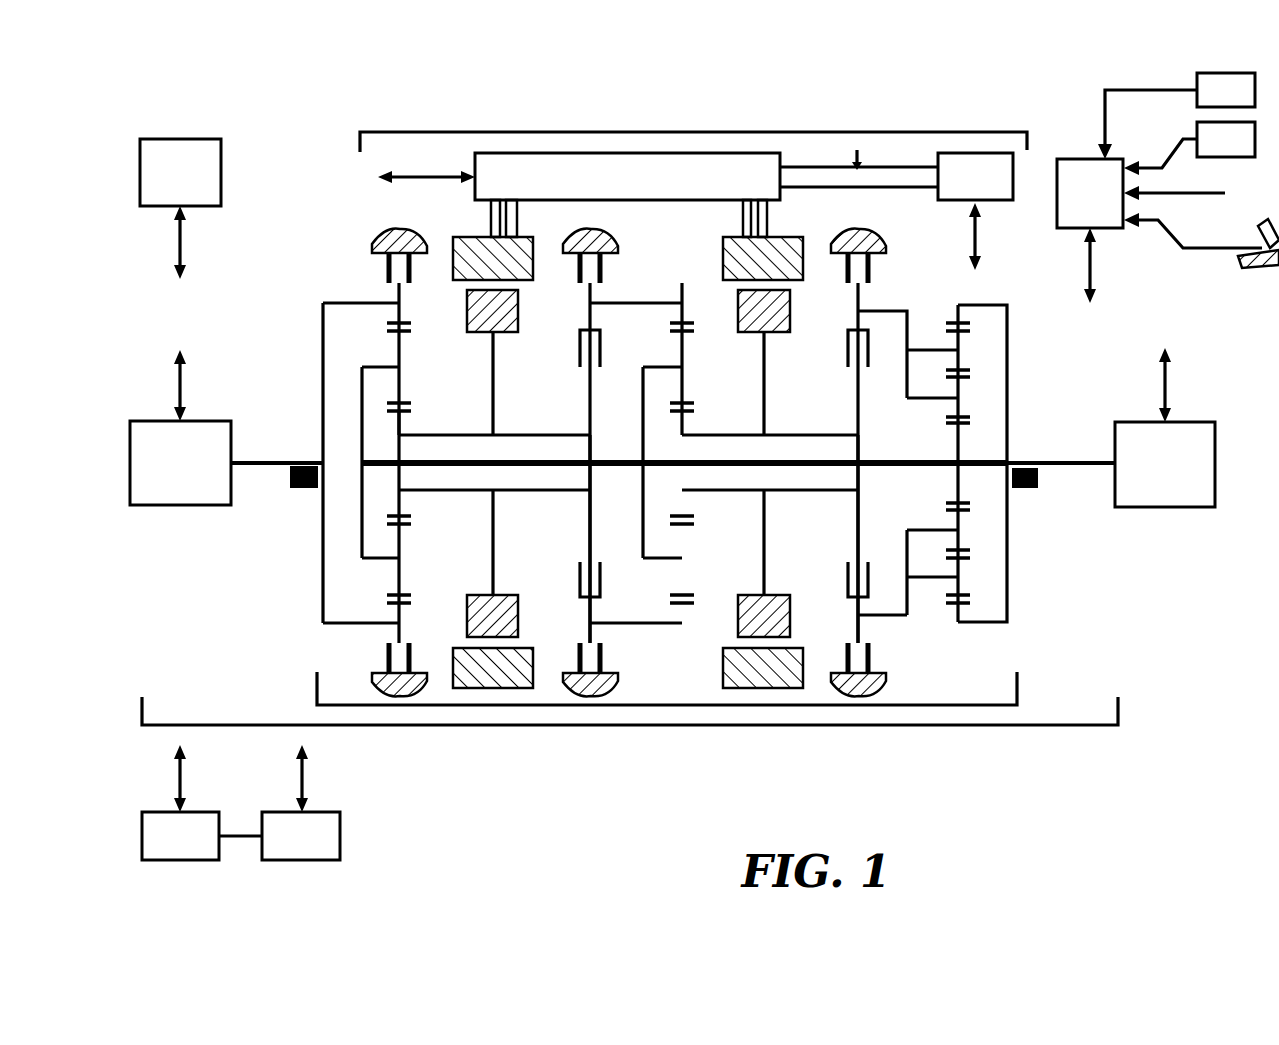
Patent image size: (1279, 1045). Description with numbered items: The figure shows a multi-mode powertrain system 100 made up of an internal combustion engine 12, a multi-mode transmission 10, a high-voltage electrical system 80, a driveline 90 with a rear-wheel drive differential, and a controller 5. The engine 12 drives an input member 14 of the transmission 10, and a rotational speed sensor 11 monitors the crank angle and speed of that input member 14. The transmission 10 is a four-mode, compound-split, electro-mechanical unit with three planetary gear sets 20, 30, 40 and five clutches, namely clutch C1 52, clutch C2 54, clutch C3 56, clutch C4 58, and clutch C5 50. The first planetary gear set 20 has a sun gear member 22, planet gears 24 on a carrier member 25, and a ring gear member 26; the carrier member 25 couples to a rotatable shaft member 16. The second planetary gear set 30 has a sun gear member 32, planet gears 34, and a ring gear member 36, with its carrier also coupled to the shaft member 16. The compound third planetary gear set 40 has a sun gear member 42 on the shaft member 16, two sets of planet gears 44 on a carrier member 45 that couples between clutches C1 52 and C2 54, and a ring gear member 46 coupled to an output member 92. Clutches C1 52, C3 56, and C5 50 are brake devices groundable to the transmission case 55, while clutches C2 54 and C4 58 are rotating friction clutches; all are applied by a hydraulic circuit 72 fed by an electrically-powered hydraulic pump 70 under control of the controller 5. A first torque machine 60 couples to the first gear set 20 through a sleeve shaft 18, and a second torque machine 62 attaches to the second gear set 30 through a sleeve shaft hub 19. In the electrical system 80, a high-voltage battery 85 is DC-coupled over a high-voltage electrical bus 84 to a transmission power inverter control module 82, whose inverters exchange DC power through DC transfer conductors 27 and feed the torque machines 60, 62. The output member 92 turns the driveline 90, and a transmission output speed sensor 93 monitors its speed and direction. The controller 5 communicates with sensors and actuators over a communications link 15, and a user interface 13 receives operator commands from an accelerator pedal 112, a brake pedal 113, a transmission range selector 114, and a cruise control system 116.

The controller 5 is at (171, 183).
The multi-mode transmission 10 is at (797, 706).
The rotational speed sensor 11 is at (305, 491).
The internal combustion engine 12 is at (167, 474).
The user interface 13 is at (1077, 205).
The input member 14 is at (270, 466).
The communications link 15 is at (410, 174).
The rotatable shaft member 16 is at (602, 461).
The sleeve shaft 18 is at (537, 435).
The sleeve shaft hub 19 is at (812, 435).
The first planetary gear set 20 is at (409, 504).
The sun gear member 22 is at (410, 413).
The planet gears 24 is at (401, 367).
The carrier member 25 is at (362, 436).
The ring gear member 26 is at (401, 320).
The DC transfer conductors 27 is at (519, 216).
The second planetary gear set 30 is at (689, 558).
The sun gear member 32 is at (694, 413).
The planet gears 34 is at (684, 367).
The ring gear member 36 is at (686, 320).
The third planetary gear set 40 is at (946, 456).
The sun gear member 42 is at (961, 502).
The planet gears 44 is at (963, 530).
The carrier member 45 is at (910, 318).
The ring gear member 46 is at (957, 602).
The clutch C5 50 is at (386, 268).
The clutch C1 52 is at (872, 270).
The clutch C2 54 is at (846, 357).
The transmission case 55 is at (385, 237).
The clutch C3 56 is at (604, 267).
The clutch C4 58 is at (579, 357).
The first torque machine 60 is at (512, 292).
The second torque machine 62 is at (786, 292).
The electrically-powered hydraulic pump 70 is at (167, 847).
The hydraulic circuit 72 is at (288, 847).
The high-voltage electrical system 80 is at (704, 131).
The transmission power inverter control module 82 is at (615, 188).
The high-voltage electrical bus 84 is at (893, 166).
The high-voltage battery 85 is at (962, 188).
The driveline 90 is at (1152, 476).
The output member 92 is at (1066, 462).
The transmission output speed sensor 93 is at (1040, 484).
The multi-mode powertrain system 100 is at (702, 727).
The accelerator pedal 112 is at (1256, 246).
The operator brake pedal 113 is at (1227, 207).
The transmission range selector 114 is at (1208, 150).
The vehicle speed cruise control system 116 is at (1208, 101).